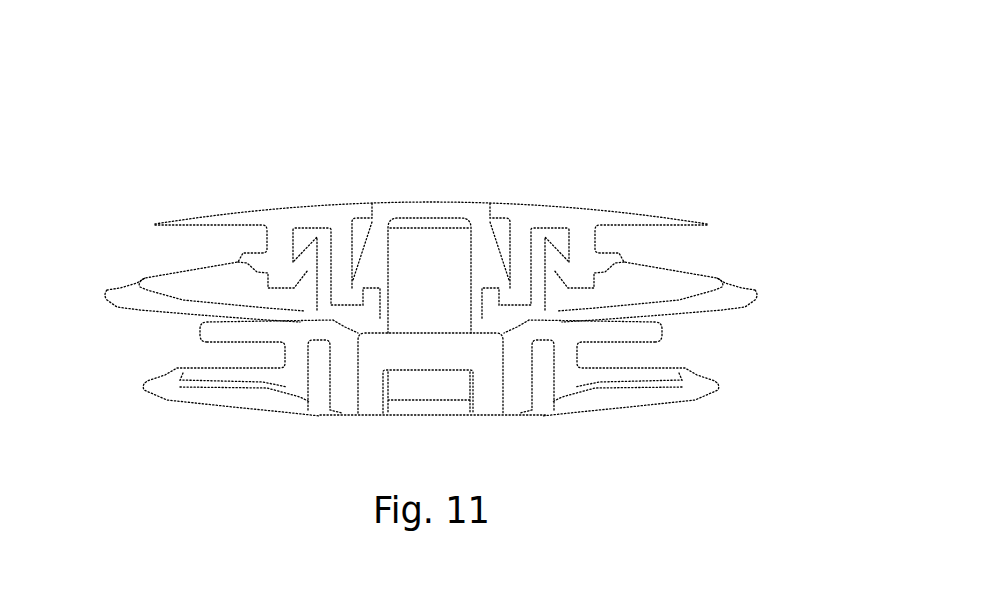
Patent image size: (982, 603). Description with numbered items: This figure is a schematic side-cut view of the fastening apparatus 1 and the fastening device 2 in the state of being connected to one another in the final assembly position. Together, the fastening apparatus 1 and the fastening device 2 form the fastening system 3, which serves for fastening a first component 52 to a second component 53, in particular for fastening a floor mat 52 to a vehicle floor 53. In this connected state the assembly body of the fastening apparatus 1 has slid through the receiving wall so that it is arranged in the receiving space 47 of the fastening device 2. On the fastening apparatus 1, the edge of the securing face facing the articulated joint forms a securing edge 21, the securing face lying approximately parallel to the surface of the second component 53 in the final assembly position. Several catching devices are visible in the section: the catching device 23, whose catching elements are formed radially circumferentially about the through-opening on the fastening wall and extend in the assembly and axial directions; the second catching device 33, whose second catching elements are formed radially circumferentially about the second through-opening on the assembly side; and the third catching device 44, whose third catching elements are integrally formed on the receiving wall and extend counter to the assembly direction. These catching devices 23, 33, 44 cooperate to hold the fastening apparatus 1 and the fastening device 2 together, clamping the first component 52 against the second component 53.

The fastening apparatus 1 is at (683, 422).
The fastening device 2 is at (741, 321).
The fastening system 3 is at (797, 59).
The securing edge 21 is at (433, 210).
The catching device 23 is at (310, 390).
The second catching device 33 is at (352, 275).
The third catching device 44 is at (557, 245).
The receiving space 47 is at (497, 227).
The first component 52 is at (196, 240).
The second component 53 is at (196, 352).